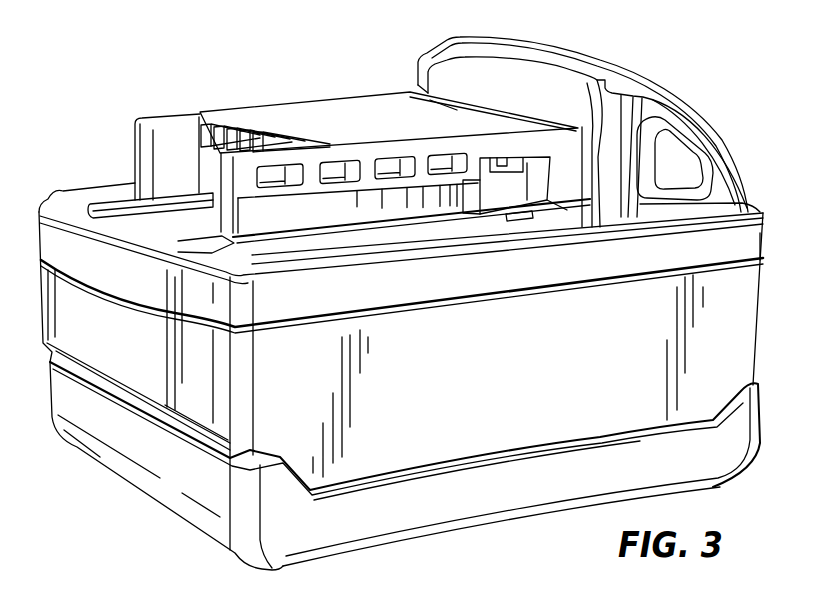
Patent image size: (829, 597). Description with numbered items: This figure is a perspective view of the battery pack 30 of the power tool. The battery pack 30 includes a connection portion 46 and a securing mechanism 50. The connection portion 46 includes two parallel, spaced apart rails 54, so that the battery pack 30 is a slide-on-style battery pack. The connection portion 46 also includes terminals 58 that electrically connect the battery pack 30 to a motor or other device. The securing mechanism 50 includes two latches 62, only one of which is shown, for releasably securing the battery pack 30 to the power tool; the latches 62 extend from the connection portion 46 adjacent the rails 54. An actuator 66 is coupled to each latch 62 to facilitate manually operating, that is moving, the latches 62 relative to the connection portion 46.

The battery pack 30 is at (140, 58).
The connection portion 46 is at (344, 105).
The securing mechanism 50 is at (521, 233).
The rails 54 is at (142, 118).
The terminals 58 is at (272, 122).
The latches 62 is at (505, 185).
The actuator 66 is at (677, 167).